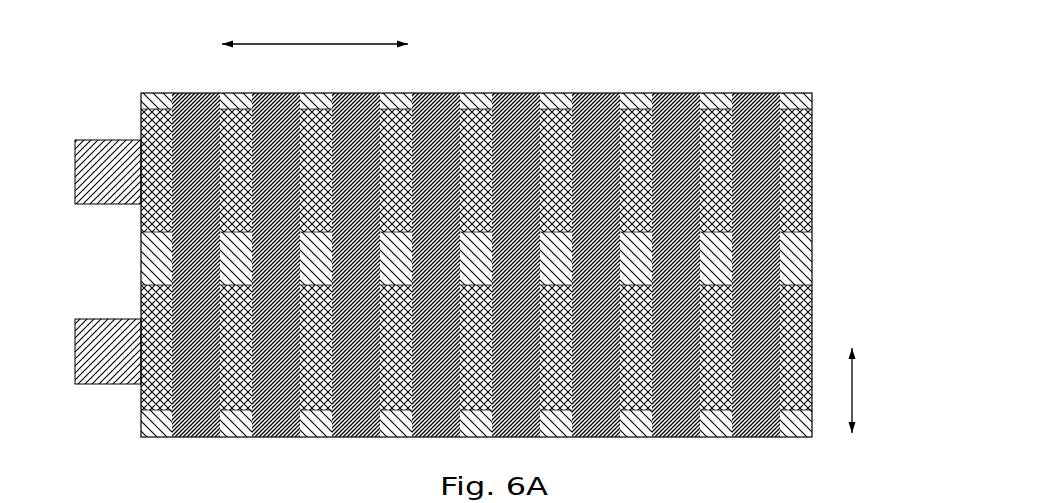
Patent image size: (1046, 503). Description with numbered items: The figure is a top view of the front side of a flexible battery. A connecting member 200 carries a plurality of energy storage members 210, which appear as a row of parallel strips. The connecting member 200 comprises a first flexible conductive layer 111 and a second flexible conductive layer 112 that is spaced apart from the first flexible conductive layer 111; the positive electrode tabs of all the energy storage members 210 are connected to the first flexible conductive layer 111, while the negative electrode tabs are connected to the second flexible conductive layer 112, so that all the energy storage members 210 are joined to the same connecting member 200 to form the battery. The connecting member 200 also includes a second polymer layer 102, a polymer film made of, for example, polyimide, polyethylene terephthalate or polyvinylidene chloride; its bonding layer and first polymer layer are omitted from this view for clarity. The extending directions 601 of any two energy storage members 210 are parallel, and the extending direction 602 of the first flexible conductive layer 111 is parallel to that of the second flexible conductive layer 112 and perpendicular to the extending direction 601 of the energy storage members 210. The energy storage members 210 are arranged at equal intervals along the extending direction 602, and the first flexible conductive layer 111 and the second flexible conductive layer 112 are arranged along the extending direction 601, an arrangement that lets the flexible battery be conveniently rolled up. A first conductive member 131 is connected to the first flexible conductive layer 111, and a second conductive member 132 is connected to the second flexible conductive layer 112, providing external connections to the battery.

The second polymer layer 102 is at (796, 92).
The first flexible conductive layer 111 is at (812, 168).
The second flexible conductive layer 112 is at (812, 348).
The first conductive member 131 is at (108, 140).
The second conductive member 132 is at (108, 319).
The connecting member 200 is at (813, 260).
The energy storage members 210 is at (528, 100).
The extending direction of energy storage member 601 is at (867, 390).
The extending direction of flexible conductive layer 602 is at (315, 31).